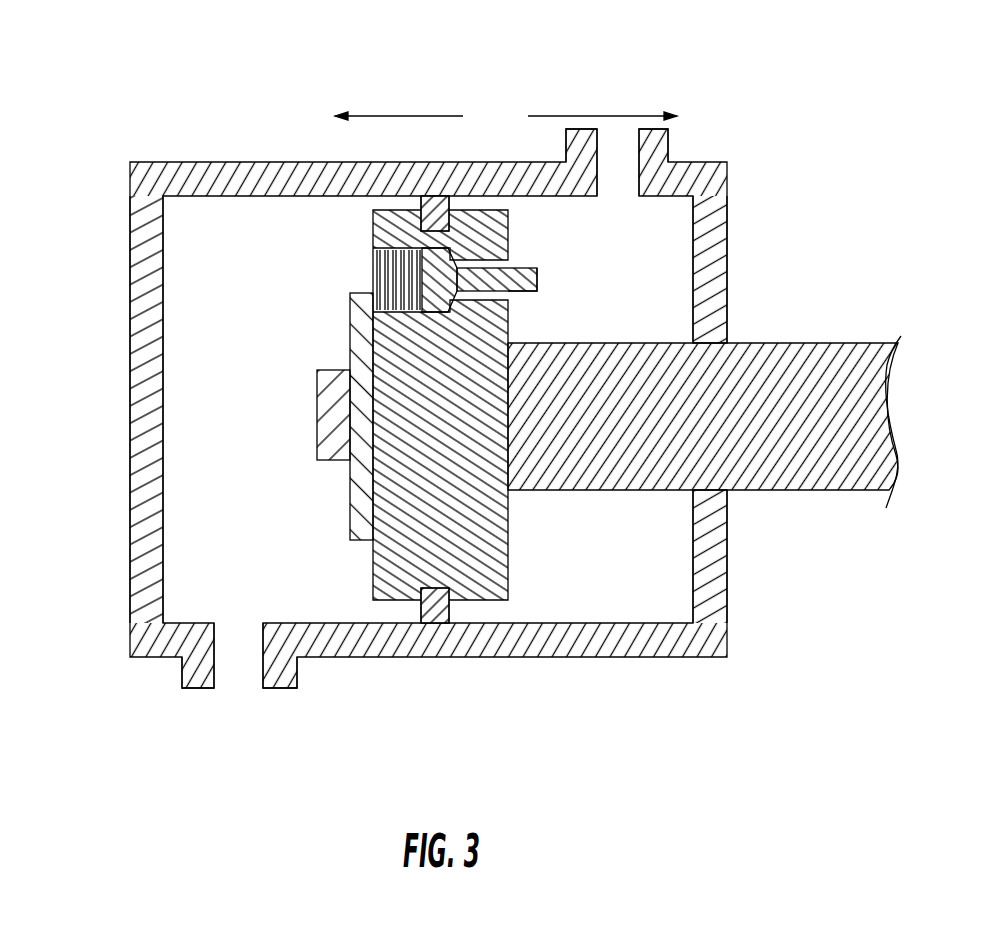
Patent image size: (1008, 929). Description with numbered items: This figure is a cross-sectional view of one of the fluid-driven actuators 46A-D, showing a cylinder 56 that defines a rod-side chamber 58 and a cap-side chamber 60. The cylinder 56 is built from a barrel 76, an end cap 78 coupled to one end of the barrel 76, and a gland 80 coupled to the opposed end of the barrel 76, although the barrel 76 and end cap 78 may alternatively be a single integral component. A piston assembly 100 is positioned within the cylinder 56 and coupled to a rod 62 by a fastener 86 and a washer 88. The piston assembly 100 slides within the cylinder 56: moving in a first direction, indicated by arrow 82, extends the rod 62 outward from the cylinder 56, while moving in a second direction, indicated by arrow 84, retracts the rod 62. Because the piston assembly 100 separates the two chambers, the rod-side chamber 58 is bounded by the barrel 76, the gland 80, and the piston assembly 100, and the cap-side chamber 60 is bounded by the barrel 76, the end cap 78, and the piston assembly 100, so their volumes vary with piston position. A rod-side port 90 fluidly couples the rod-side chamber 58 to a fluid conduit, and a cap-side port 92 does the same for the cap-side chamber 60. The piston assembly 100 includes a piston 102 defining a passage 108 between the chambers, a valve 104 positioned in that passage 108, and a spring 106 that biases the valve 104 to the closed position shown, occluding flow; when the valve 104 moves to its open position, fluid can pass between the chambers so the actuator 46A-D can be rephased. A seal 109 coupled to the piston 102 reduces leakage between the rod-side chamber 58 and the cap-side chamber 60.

The fluid-driven actuator 46A-D is at (208, 88).
The cylinder 56 is at (363, 697).
The rod-side chamber 58 is at (602, 593).
The cap-side chamber 60 is at (208, 572).
The rod 62 is at (843, 343).
The barrel 76 is at (690, 162).
The end cap 78 is at (129, 358).
The gland 80 is at (727, 575).
The first direction arrow 82 is at (572, 116).
The second direction arrow 84 is at (399, 116).
The fastener 86 is at (317, 422).
The washer 88 is at (350, 494).
The rod-side port 90 is at (660, 146).
The cap-side port 92 is at (180, 675).
The piston assembly 100 is at (283, 288).
The piston 102 is at (508, 543).
The valve 104 is at (527, 268).
The spring 106 is at (373, 260).
The passage 108 is at (502, 292).
The seal 109 is at (448, 200).